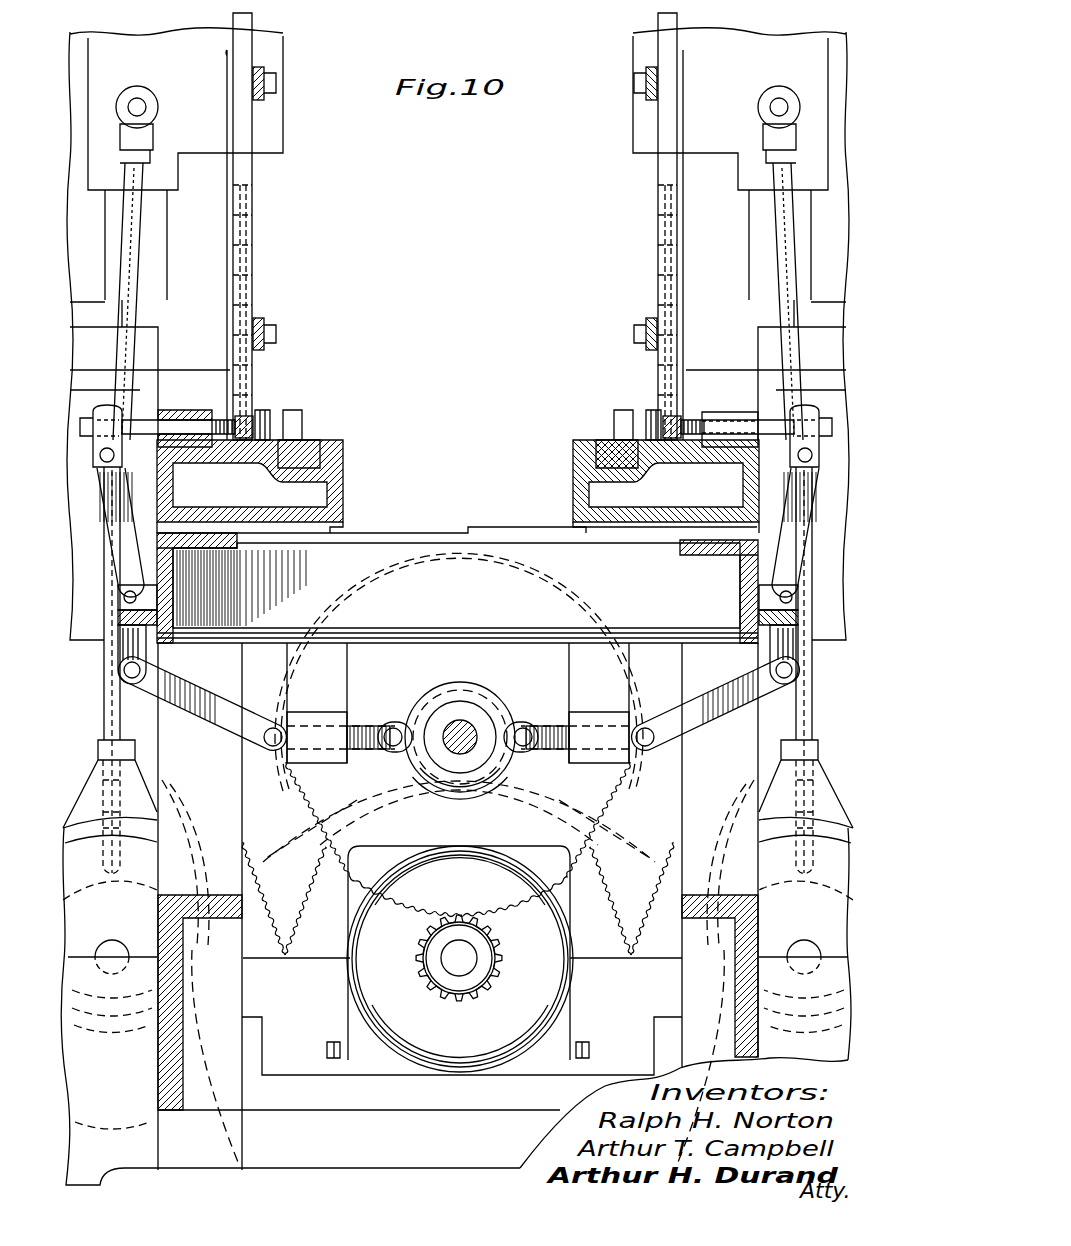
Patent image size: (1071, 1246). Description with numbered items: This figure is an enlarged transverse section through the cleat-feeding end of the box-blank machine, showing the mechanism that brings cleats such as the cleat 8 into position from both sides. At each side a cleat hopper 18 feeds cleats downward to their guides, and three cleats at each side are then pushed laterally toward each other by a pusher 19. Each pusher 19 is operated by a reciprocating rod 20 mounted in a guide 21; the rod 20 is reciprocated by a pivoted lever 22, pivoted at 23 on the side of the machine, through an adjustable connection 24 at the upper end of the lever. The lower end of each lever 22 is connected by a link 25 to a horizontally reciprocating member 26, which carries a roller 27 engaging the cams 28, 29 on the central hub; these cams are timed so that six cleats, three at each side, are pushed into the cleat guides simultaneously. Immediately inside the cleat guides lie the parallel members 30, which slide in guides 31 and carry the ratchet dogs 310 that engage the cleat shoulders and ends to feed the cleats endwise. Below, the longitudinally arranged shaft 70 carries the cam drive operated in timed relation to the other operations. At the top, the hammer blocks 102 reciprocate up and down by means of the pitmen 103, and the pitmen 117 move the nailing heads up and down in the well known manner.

The cleat 8 is at (268, 417).
The cleat hopper 18 is at (252, 223).
The pusher 19 is at (240, 418).
The reciprocating rod 20 is at (183, 422).
The guide 21 is at (198, 444).
The pivoted lever 22 is at (126, 548).
The pivot 23 is at (124, 597).
The adjustable connection 24 is at (104, 420).
The link 25 is at (216, 724).
The horizontally reciprocating member 26 is at (366, 716).
The roller 27 is at (392, 754).
The cam 28 is at (438, 690).
The cam 29 is at (486, 694).
The parallel member 30 is at (302, 444).
The guide 31 is at (344, 466).
The shaft 70 is at (458, 748).
The hammer block 102 is at (280, 131).
The pitman 103 is at (133, 216).
The pitman 117 is at (106, 663).
The ratchet dog 310 is at (300, 412).